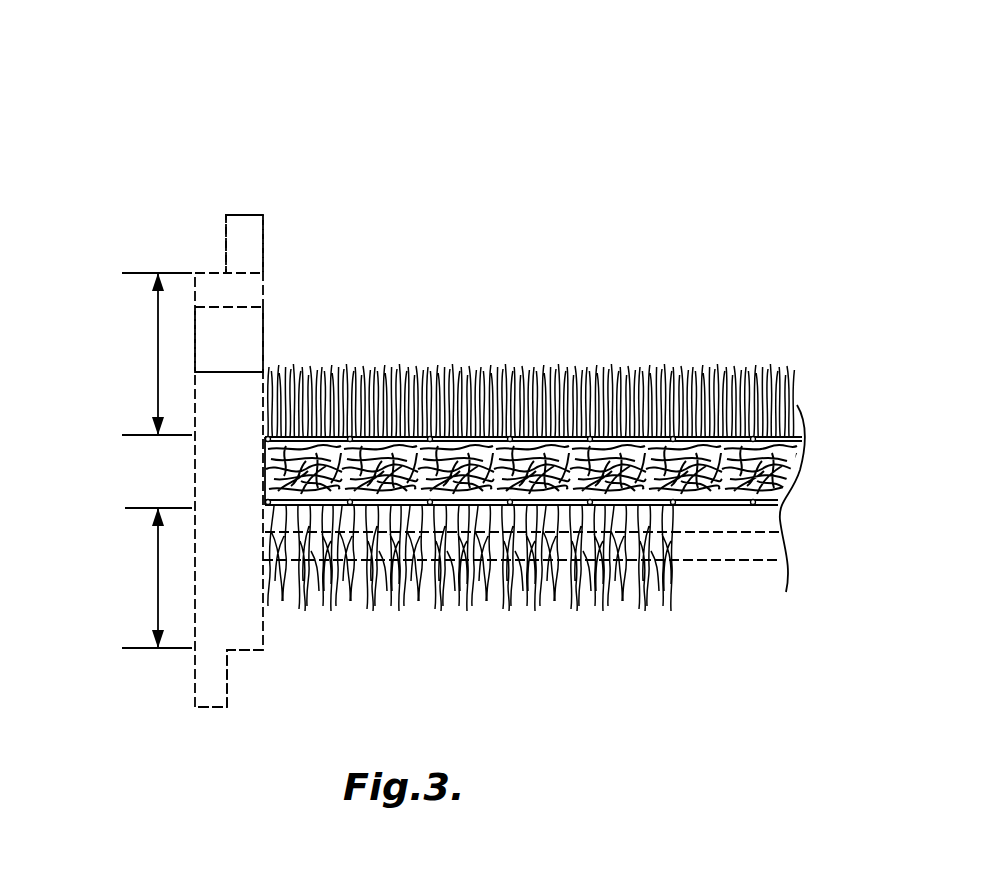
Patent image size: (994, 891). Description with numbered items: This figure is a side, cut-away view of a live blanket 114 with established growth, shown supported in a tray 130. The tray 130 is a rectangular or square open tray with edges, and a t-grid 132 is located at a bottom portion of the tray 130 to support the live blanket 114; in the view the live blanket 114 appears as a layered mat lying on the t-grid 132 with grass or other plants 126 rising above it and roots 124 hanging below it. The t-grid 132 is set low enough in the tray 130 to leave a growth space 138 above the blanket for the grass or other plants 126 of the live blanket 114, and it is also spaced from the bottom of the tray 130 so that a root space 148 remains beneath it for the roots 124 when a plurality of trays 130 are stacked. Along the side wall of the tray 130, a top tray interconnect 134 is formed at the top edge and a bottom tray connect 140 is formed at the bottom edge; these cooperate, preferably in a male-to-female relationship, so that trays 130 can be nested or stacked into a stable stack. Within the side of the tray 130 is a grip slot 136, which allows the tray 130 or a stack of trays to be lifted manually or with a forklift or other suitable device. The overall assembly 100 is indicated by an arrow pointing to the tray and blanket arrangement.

The artificial turf system 100 is at (502, 165).
The live blanket 114 is at (783, 441).
The roots 124 is at (365, 598).
The grass or other plants 126 is at (520, 368).
The tray 130 is at (187, 473).
The t-grid 132 is at (752, 542).
The top tray interconnect 134 is at (226, 242).
The grip slot 136 is at (233, 335).
The growth space 138 is at (157, 360).
The bottom tray connect 140 is at (227, 673).
The root space 148 is at (158, 570).